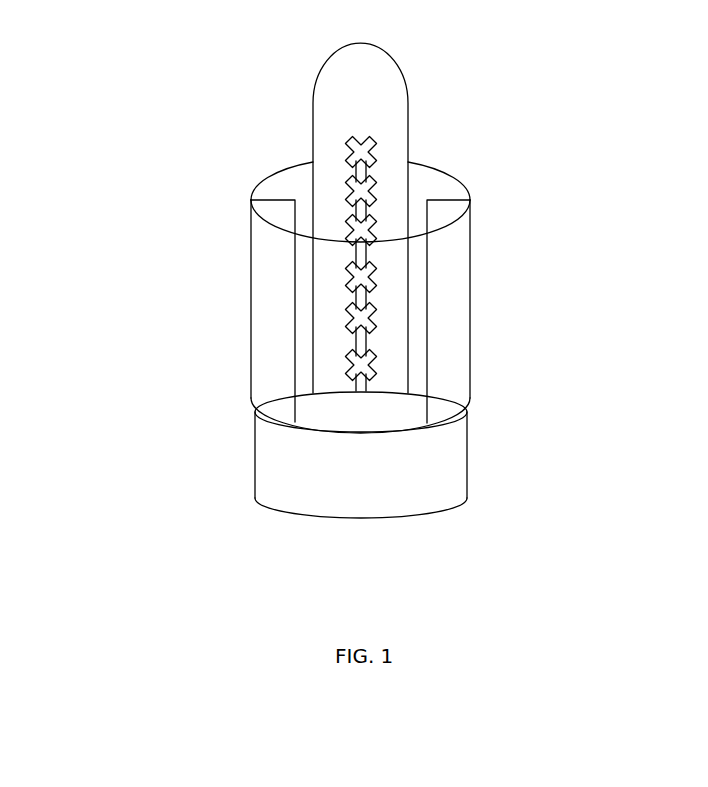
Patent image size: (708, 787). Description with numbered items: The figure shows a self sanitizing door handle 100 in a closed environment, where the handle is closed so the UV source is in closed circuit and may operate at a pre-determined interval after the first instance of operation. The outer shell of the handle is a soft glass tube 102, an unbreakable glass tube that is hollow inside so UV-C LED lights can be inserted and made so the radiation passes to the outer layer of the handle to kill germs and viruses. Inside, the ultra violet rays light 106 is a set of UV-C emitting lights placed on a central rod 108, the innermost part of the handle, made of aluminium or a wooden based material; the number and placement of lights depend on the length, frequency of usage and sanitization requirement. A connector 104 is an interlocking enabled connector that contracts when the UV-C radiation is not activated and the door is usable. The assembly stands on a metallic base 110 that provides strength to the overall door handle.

The self sanitizing door handle 100 is at (158, 68).
The soft glass tube 102 is at (318, 90).
The connector 104 is at (292, 340).
The ultra violet rays light 106 is at (378, 145).
The central rod 108 is at (375, 301).
The base 110 is at (470, 397).